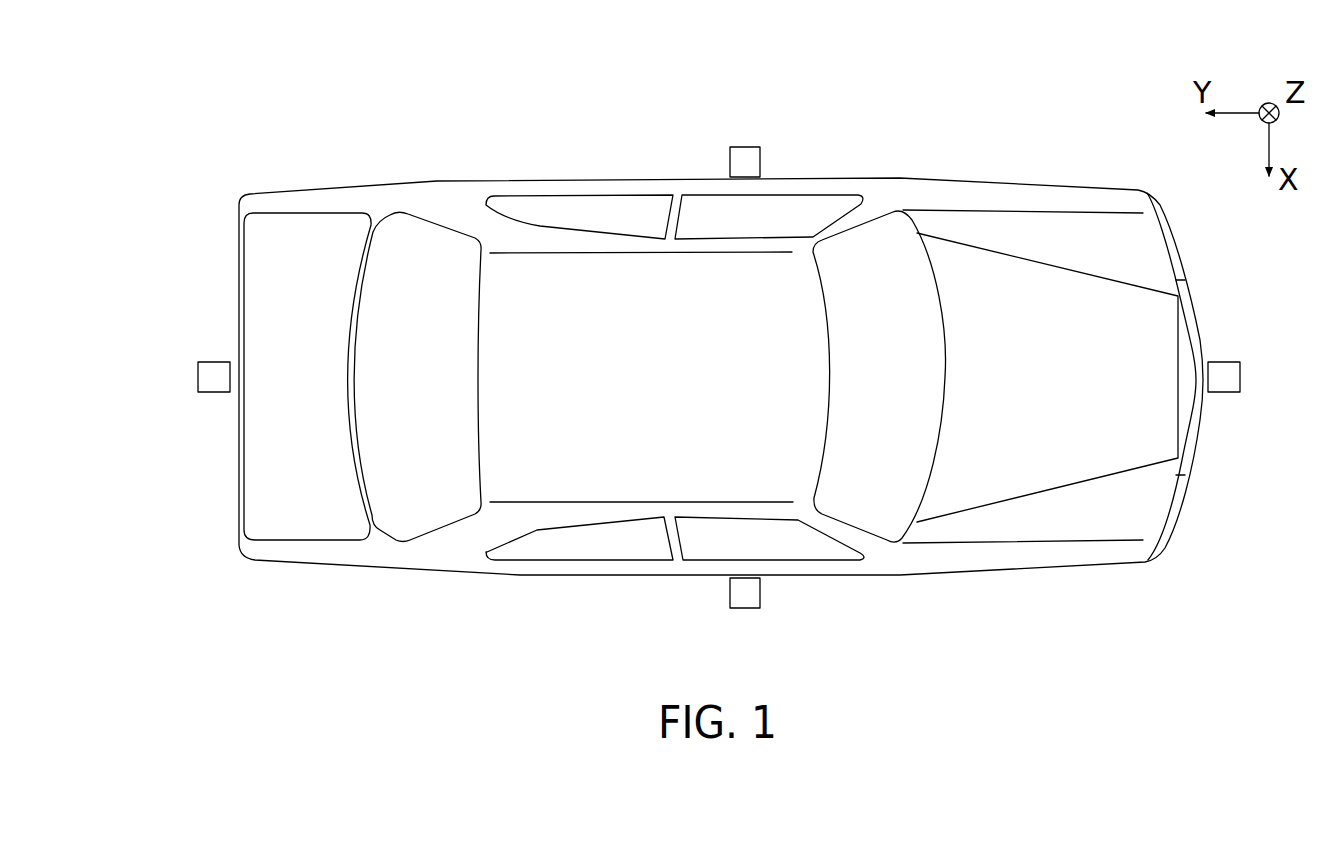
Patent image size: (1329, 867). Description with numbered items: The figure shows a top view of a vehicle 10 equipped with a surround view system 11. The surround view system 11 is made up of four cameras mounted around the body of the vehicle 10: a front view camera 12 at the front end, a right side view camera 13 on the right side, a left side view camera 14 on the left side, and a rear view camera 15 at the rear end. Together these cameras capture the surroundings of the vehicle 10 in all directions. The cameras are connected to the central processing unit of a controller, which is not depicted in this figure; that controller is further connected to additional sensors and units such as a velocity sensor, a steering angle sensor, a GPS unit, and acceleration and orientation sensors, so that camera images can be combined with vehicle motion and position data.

The vehicle 10 is at (438, 183).
The surround view system 11 is at (826, 84).
The front view camera 12 is at (1240, 373).
The right side view camera 13 is at (760, 592).
The left side view camera 14 is at (745, 146).
The rear view camera 15 is at (198, 372).